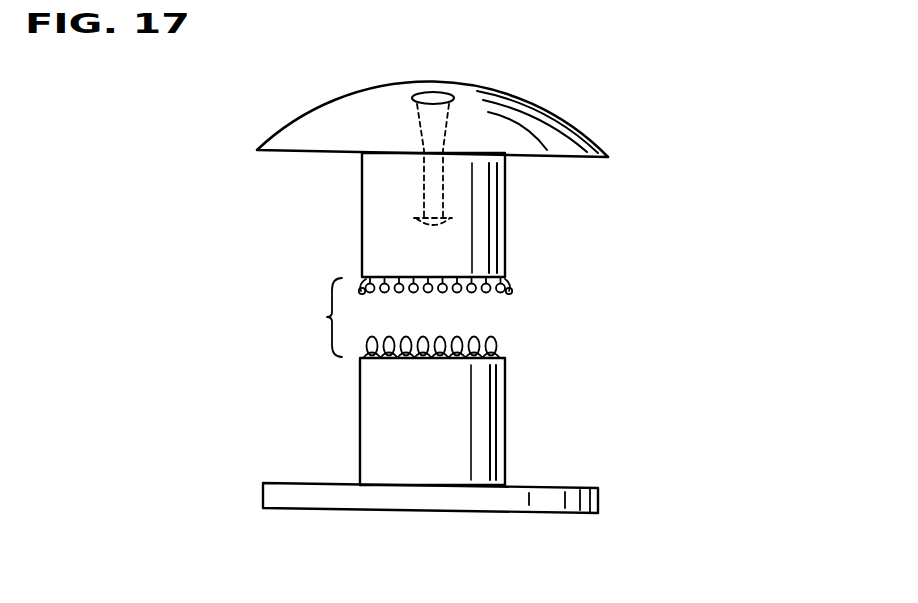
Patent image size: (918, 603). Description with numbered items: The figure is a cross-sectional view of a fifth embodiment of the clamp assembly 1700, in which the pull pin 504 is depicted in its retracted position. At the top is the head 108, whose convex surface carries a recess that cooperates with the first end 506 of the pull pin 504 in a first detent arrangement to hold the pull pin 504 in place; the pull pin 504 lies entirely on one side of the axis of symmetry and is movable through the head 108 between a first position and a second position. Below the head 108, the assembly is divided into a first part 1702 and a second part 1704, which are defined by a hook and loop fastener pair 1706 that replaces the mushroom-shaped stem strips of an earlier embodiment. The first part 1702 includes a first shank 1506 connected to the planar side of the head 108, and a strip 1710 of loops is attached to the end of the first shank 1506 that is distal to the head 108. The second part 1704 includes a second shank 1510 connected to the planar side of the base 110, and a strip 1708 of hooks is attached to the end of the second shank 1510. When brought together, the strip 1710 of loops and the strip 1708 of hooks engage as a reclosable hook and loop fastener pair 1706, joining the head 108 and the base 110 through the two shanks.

The clamp assembly 1700 is at (668, 190).
The head 108 is at (532, 122).
The first end 506 is at (433, 95).
The pull pin 504 is at (428, 132).
The first part 1702 is at (335, 214).
The first shank 1506 is at (492, 213).
The strip of loops 1710 is at (530, 286).
The hook and loop fastener pair 1706 is at (310, 317).
The strip of hooks 1708 is at (522, 348).
The second part 1704 is at (340, 403).
The second shank 1510 is at (492, 421).
The base 110 is at (598, 500).